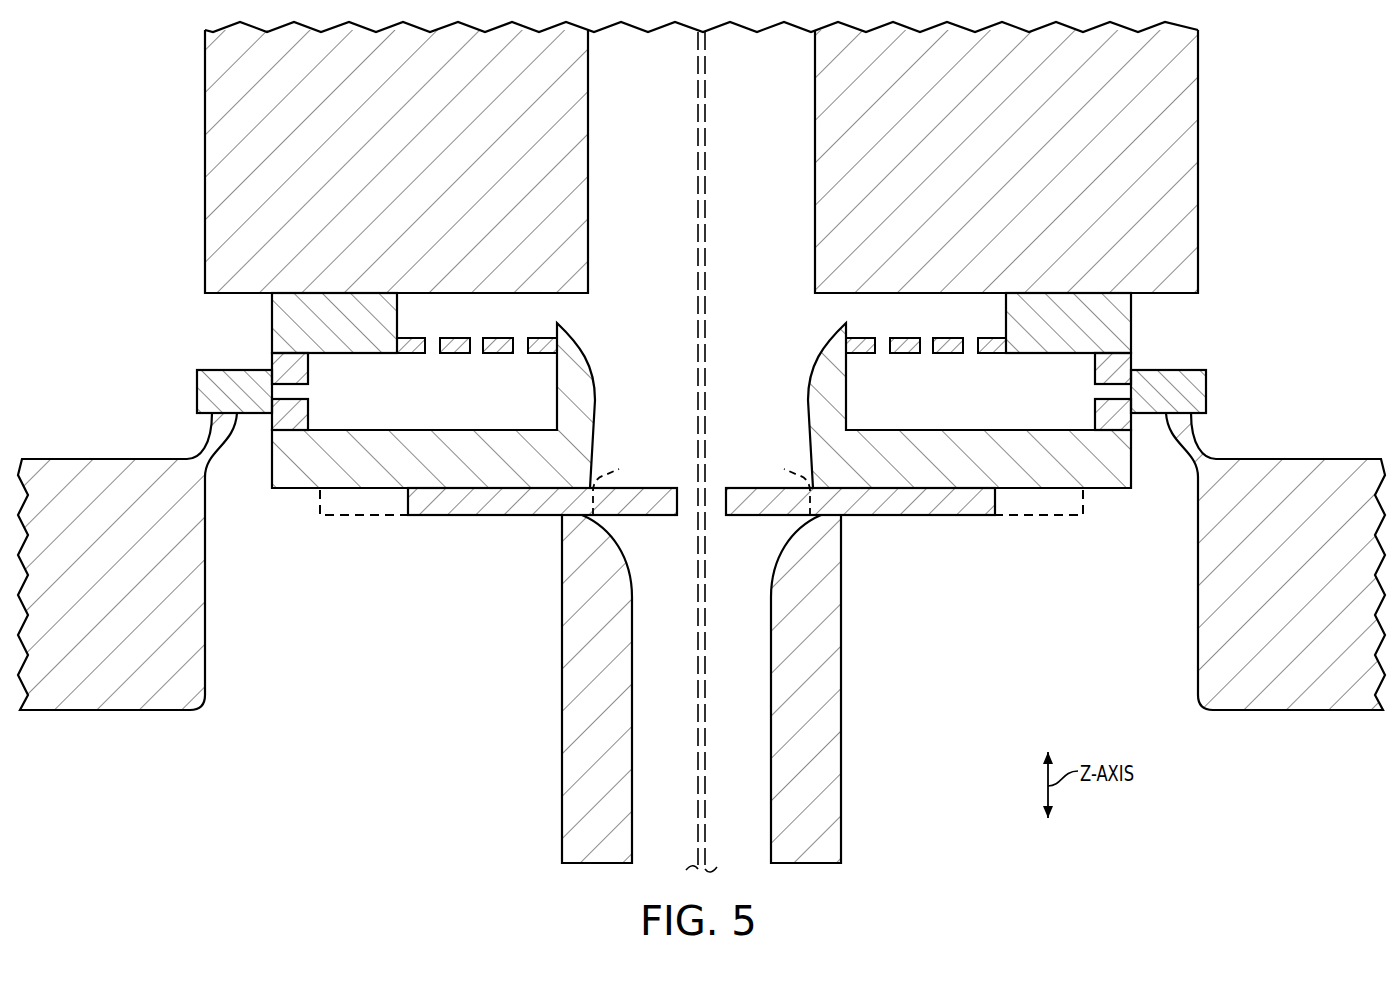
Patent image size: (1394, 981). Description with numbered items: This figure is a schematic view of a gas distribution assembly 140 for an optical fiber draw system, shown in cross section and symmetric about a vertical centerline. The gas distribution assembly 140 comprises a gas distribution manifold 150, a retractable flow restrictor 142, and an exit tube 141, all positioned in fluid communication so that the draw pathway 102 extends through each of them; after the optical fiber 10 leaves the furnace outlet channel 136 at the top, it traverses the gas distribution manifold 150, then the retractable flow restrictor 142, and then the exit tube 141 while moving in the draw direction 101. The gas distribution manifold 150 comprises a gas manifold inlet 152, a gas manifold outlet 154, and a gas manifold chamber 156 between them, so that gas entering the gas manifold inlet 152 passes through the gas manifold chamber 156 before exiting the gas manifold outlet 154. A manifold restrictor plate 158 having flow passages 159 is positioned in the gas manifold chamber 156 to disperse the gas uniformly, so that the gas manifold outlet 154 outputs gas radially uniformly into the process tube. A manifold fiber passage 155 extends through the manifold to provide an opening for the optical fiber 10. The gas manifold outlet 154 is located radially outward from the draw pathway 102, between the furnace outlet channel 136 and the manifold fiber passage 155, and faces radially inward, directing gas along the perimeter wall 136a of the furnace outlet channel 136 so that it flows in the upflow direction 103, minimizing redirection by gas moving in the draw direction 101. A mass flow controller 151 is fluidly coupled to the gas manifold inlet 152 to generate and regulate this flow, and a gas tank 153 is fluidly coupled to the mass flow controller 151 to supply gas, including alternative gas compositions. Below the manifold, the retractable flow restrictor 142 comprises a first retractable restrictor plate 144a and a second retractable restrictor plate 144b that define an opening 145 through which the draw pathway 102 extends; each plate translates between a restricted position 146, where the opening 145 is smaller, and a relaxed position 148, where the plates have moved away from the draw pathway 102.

The optical fiber 10 is at (706, 608).
The draw direction 101 is at (723, 262).
The draw pathway 102 is at (697, 752).
The upflow direction 103 is at (620, 190).
The furnace outlet channel 136 is at (815, 102).
The perimeter wall of the furnace outlet channel 136a is at (588, 90).
The gas distribution assembly 140 is at (1242, 296).
The exit tube 141 is at (562, 748).
The retractable flow restrictor 142 is at (485, 591).
The first retractable restrictor plate 144a is at (507, 515).
The second retractable restrictor plate 144b is at (896, 515).
The opening 145 is at (684, 516).
The restricted position 146 is at (677, 500).
The relaxed position 148 is at (701, 483).
The gas distribution manifold 150 is at (153, 334).
The mass flow controller 151 is at (197, 395).
The gas manifold inlet 152 is at (272, 386).
The gas tank 153 is at (110, 710).
The gas manifold outlet 154 is at (571, 300).
The manifold fiber passage 155 is at (597, 403).
The gas manifold chamber 156 is at (372, 382).
The manifold restrictor plate 158 is at (412, 338).
The flow passage 159 is at (433, 338).